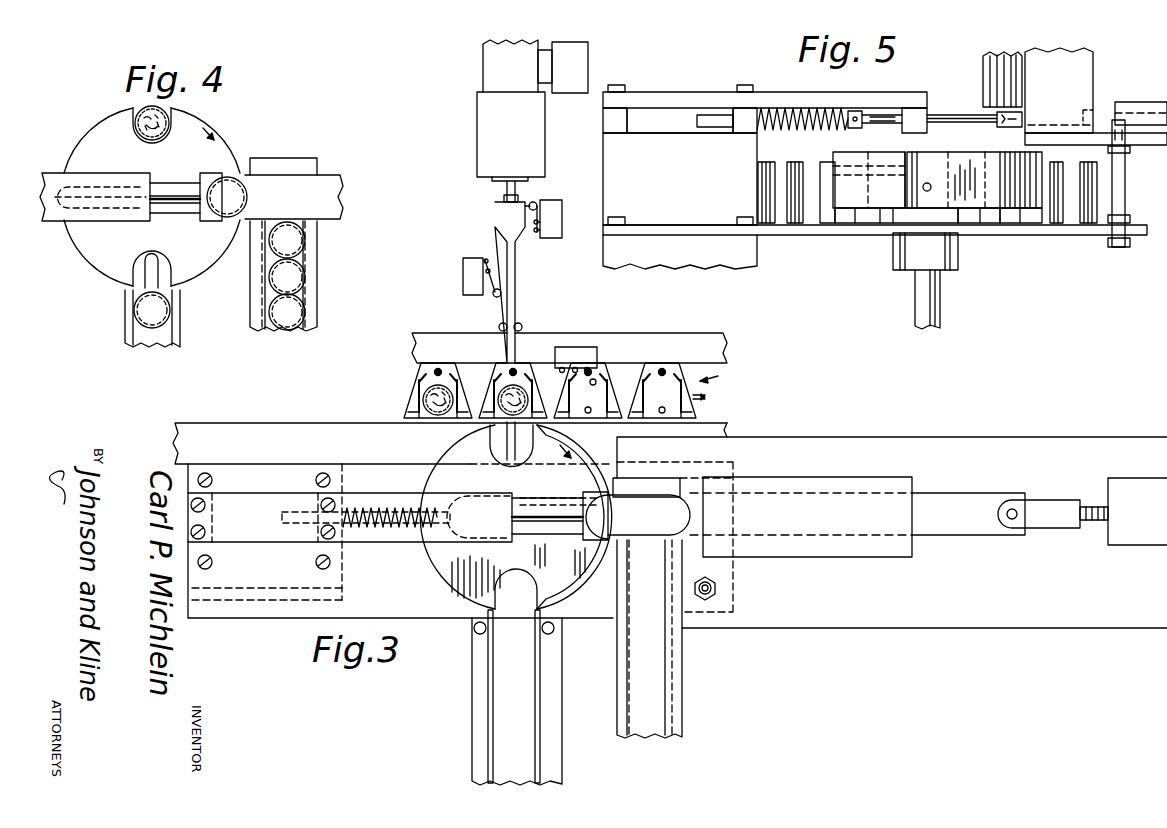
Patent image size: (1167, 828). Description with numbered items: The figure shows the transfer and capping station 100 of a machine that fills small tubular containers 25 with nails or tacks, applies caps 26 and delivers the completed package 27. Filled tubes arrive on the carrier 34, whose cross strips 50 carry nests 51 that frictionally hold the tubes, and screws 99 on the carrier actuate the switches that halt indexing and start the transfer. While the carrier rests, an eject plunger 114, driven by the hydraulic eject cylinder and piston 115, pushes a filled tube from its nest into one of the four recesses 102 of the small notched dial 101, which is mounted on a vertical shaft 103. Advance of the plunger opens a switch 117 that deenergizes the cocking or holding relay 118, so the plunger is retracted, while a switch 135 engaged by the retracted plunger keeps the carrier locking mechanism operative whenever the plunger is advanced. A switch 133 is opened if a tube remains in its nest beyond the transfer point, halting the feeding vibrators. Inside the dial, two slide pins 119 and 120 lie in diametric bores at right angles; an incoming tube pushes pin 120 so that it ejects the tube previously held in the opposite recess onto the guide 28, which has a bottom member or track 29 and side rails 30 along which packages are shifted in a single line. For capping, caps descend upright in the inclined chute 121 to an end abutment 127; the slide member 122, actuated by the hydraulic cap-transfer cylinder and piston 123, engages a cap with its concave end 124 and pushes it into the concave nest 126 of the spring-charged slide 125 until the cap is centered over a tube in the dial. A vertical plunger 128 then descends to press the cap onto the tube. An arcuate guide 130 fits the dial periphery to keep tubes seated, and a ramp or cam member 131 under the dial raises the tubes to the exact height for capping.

In FIG. 4, the container 25 is at (141, 112).
In FIG. 3, the container 25 is at (420, 391).
In FIG. 4, the cap 26 is at (233, 184).
In FIG. 4, the completed package 27 is at (128, 312).
In FIG. 4, the guide 28 is at (122, 339).
In FIG. 3, the guide 28 is at (572, 758).
In FIG. 3, the bottom member or track 29 is at (508, 730).
In FIG. 3, the chute rails 30 is at (490, 702).
In FIG. 3, the carrier 34 is at (728, 362).
In FIG. 3, the cross strips 50 is at (676, 372).
In FIG. 5, the nests 51 is at (785, 161).
In FIG. 3, the nests 51 is at (565, 404).
In FIG. 3, the screws 99 is at (438, 369).
In FIG. 5, the transfer and capping station 100 is at (875, 177).
In FIG. 3, the transfer and capping station 100 is at (378, 417).
In FIG. 4, the notched dial 101 is at (100, 136).
In FIG. 5, the notched dial 101 is at (848, 197).
In FIG. 3, the notched dial 101 is at (450, 480).
In FIG. 4, the notches or recesses 102 is at (141, 140).
In FIG. 5, the notches or recesses 102 is at (938, 205).
In FIG. 3, the notches or recesses 102 is at (500, 466).
In FIG. 5, the shaft 103 is at (914, 304).
In FIG. 3, the eject plunger 114 is at (516, 279).
In FIG. 3, the hydraulic eject cylinder and piston 115 is at (476, 122).
In FIG. 3, the switch 117 is at (463, 285).
In FIG. 3, the cocking or holding relay 118 is at (578, 60).
In FIG. 5, the slide pin or eject member 119 is at (935, 165).
In FIG. 4, the slide pin or eject member 120 is at (147, 270).
In FIG. 5, the slide pin or eject member 120 is at (920, 190).
In FIG. 3, the slide pin or eject member 120 is at (490, 434).
In FIG. 4, the inclined chute 121 is at (256, 292).
In FIG. 5, the inclined chute 121 is at (1086, 63).
In FIG. 3, the inclined chute 121 is at (657, 673).
In FIG. 4, the slide member or plunger 122 is at (330, 176).
In FIG. 5, the slide member or plunger 122 is at (1108, 110).
In FIG. 3, the slide member or plunger 122 is at (953, 503).
In FIG. 3, the hydraulic cap-transfer cylinder and piston 123 is at (1147, 479).
In FIG. 4, the concave end 124 is at (247, 191).
In FIG. 3, the concave end 124 is at (692, 500).
In FIG. 4, the spring-charged slide or plunger 125 is at (184, 190).
In FIG. 5, the spring-charged slide or plunger 125 is at (956, 116).
In FIG. 3, the spring-charged slide or plunger 125 is at (558, 530).
In FIG. 5, the concave nest 126 is at (1006, 128).
In FIG. 3, the concave nest 126 is at (594, 518).
In FIG. 3, the end abutment 127 is at (661, 492).
In FIG. 5, the vertical plunger 128 is at (983, 62).
In FIG. 5, the arcuate guide 130 is at (1005, 190).
In FIG. 3, the arcuate guide 130 is at (600, 463).
In FIG. 5, the ramp or cam member 131 is at (995, 222).
In FIG. 3, the ramp or cam member 131 is at (578, 493).
In FIG. 3, the switch 133 is at (582, 347).
In FIG. 3, the switch 135 is at (562, 216).